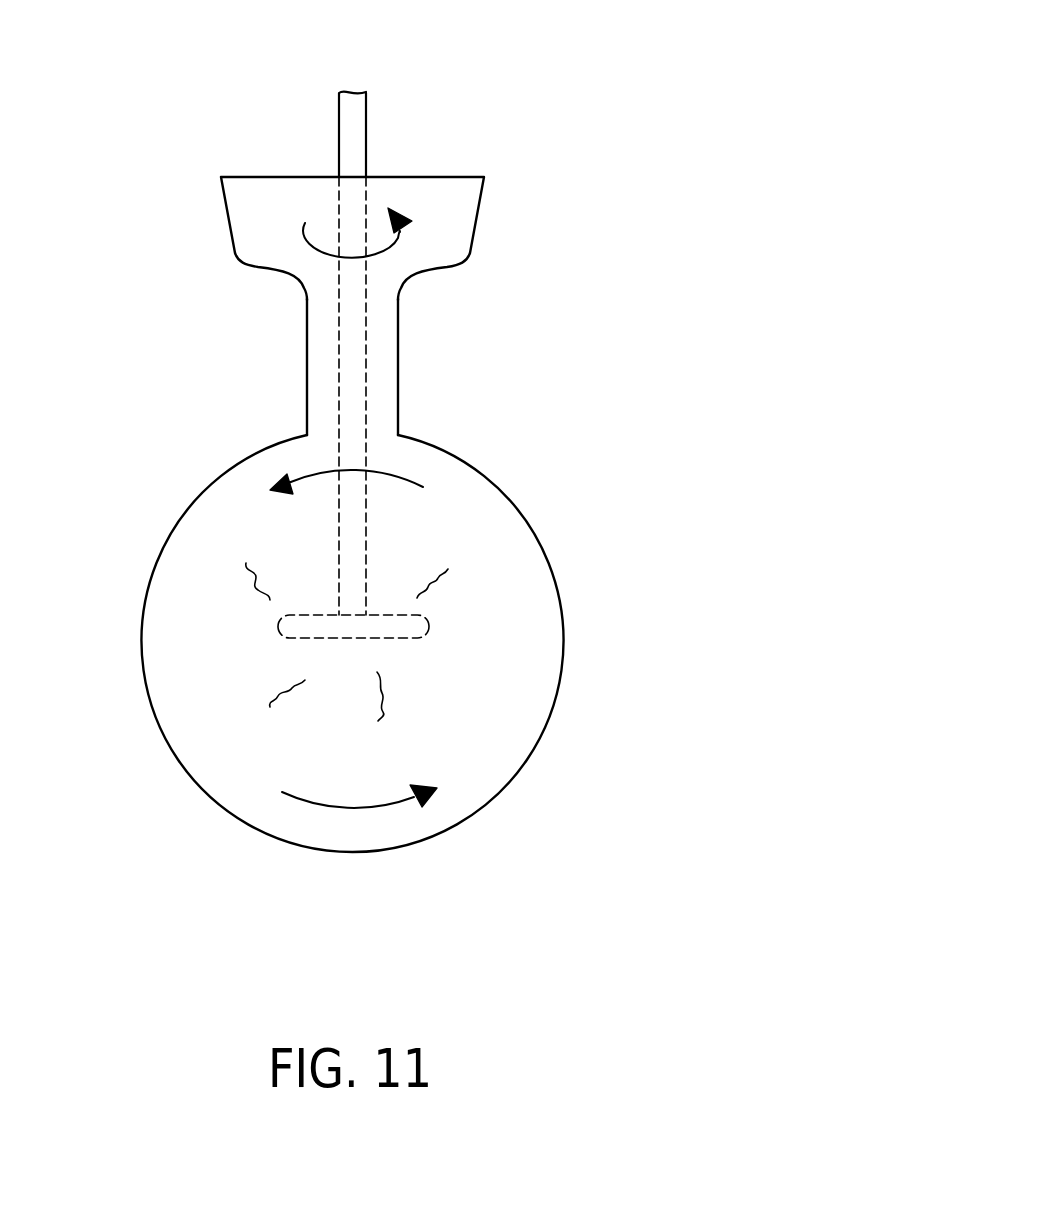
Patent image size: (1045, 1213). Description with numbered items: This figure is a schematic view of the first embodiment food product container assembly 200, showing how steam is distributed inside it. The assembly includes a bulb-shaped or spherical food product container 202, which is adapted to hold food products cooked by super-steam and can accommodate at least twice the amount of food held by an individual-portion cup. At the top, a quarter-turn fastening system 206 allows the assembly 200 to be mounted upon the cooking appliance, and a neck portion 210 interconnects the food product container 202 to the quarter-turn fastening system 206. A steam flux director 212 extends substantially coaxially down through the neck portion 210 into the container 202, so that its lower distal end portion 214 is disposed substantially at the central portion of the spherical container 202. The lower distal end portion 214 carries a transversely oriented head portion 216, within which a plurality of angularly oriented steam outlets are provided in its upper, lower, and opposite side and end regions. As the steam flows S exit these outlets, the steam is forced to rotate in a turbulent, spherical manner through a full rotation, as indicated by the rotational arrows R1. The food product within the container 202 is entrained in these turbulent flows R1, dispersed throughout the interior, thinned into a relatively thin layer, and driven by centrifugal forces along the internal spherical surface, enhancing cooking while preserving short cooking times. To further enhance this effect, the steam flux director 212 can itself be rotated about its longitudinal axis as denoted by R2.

The food product container assembly 200 is at (572, 170).
The food product container 202 is at (563, 663).
The quarter-turn fastening system 206 is at (433, 177).
The neck portion 210 is at (307, 313).
The steam flux director 212 is at (362, 343).
The lower distal end portion 214 is at (376, 615).
The head portion 216 is at (345, 638).
The steam flows S is at (290, 690).
The rotational arrows R1 is at (232, 905).
The rotation of the steam flux director R2 is at (302, 250).